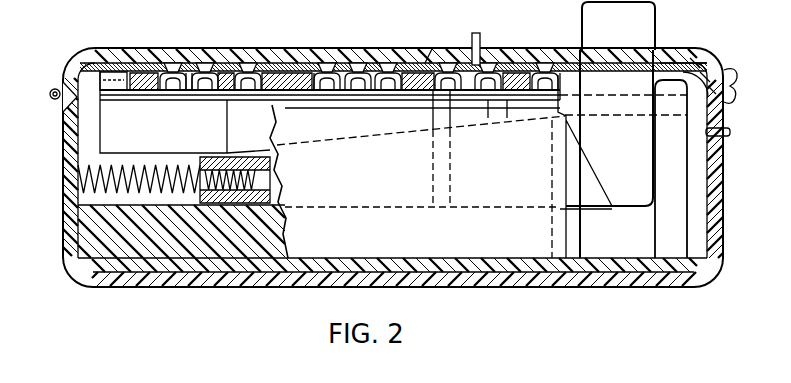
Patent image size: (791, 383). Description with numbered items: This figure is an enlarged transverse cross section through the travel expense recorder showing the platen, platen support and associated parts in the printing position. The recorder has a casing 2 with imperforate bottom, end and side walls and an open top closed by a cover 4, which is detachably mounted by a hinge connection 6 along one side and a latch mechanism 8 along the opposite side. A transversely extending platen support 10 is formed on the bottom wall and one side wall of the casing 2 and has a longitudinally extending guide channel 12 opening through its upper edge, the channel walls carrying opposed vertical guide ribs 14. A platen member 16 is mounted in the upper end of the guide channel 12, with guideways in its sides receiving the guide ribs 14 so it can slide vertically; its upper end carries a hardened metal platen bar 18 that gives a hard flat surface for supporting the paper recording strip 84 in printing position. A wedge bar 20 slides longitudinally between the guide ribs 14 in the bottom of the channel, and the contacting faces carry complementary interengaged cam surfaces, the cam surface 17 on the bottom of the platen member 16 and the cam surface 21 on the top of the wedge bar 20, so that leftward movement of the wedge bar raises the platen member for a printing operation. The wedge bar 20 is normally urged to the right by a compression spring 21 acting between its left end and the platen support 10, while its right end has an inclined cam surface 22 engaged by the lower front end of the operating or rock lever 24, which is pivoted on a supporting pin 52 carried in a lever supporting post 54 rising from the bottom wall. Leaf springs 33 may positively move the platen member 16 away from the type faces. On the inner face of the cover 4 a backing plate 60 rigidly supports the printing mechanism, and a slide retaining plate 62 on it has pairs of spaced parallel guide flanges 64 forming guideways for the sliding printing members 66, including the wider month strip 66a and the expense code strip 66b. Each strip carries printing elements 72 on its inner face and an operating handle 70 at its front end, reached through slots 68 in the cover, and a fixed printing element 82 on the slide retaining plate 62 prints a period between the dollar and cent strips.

The casing 2 is at (474, 278).
The cover 4 is at (118, 62).
The hinge connection 6 is at (50, 90).
The latch mechanism 8 is at (742, 92).
The platen support 10 is at (198, 268).
The guide channel 12 is at (78, 140).
The guide ribs 14 is at (450, 170).
The platen member 16 is at (142, 148).
The cam surface 17 is at (274, 152).
The platen bar 18 is at (372, 101).
The wedge bar 20 is at (585, 198).
The cam surface / compression spring 21 is at (150, 186).
The inclined cam surface 22 is at (590, 172).
The operating lever 24 is at (655, 12).
The leaf springs 33 is at (100, 74).
The supporting pin 52 is at (670, 118).
The lever supporting post 54 is at (684, 203).
The backing plate 60 is at (660, 56).
The slide retaining plate 62 is at (712, 64).
The guide flanges 64 is at (193, 92).
The printing members 66 is at (246, 70).
The printing strip 66a is at (166, 70).
The wide printing strip 66b is at (318, 70).
The slots 68 is at (545, 72).
The operating handle 70 is at (481, 42).
The printing elements 72 is at (145, 91).
The printing element 82 is at (432, 60).
The paper recording strip 84 is at (492, 101).